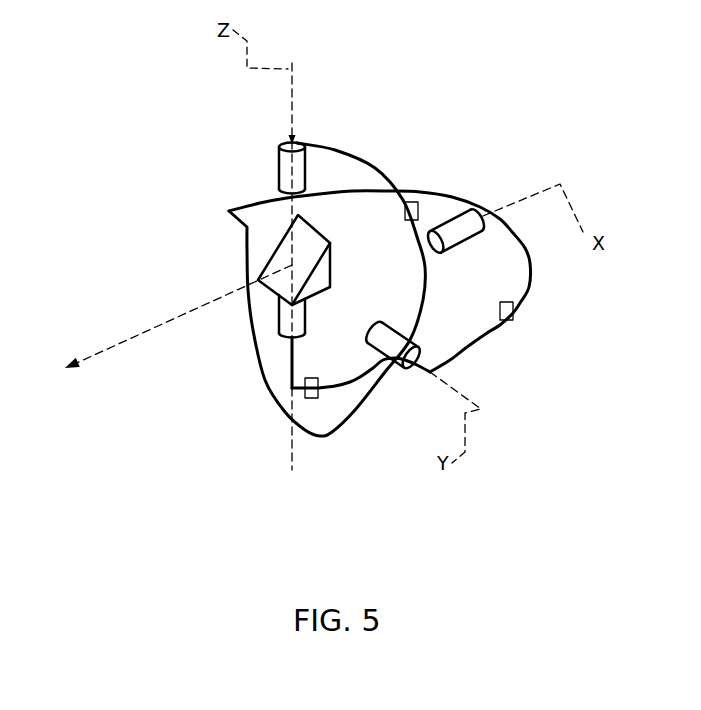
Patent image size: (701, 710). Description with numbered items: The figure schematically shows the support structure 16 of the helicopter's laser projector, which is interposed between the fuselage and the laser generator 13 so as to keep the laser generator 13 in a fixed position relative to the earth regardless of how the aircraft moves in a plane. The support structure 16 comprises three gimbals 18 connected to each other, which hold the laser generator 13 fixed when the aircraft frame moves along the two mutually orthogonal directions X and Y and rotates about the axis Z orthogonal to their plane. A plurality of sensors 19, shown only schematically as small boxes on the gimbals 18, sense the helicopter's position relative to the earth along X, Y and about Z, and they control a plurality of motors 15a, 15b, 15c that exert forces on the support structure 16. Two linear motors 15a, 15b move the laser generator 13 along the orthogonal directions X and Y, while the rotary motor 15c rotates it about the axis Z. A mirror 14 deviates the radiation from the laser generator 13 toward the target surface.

The laser generator 13 is at (290, 170).
The mirror 14 is at (286, 258).
The linear motor 15a is at (455, 228).
The linear motor 15b is at (397, 357).
The rotary motor 15c is at (288, 323).
The support structure 16 is at (357, 107).
The gimbals 18 is at (423, 267).
The sensors 19 is at (412, 202).